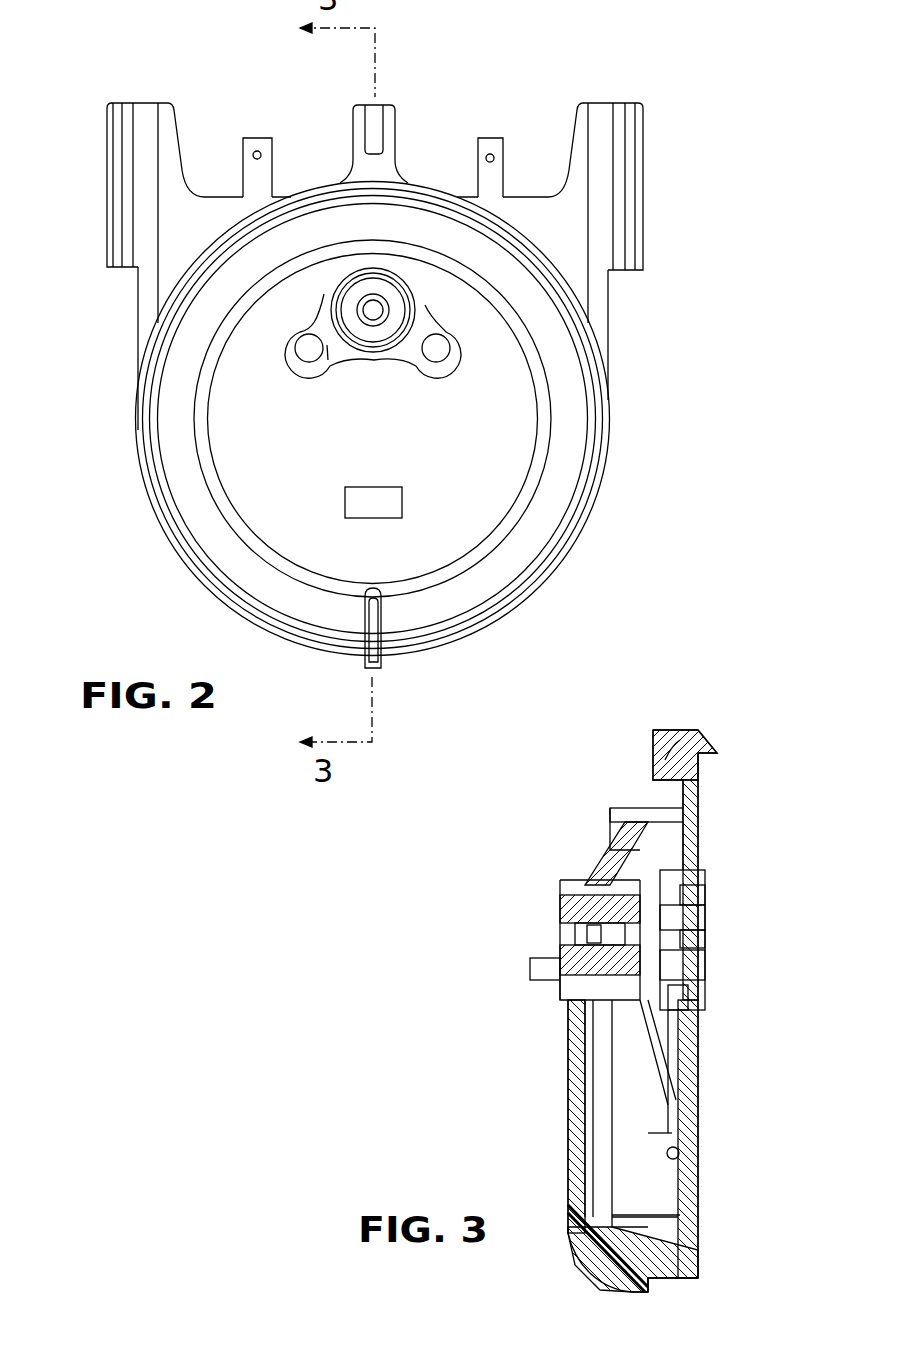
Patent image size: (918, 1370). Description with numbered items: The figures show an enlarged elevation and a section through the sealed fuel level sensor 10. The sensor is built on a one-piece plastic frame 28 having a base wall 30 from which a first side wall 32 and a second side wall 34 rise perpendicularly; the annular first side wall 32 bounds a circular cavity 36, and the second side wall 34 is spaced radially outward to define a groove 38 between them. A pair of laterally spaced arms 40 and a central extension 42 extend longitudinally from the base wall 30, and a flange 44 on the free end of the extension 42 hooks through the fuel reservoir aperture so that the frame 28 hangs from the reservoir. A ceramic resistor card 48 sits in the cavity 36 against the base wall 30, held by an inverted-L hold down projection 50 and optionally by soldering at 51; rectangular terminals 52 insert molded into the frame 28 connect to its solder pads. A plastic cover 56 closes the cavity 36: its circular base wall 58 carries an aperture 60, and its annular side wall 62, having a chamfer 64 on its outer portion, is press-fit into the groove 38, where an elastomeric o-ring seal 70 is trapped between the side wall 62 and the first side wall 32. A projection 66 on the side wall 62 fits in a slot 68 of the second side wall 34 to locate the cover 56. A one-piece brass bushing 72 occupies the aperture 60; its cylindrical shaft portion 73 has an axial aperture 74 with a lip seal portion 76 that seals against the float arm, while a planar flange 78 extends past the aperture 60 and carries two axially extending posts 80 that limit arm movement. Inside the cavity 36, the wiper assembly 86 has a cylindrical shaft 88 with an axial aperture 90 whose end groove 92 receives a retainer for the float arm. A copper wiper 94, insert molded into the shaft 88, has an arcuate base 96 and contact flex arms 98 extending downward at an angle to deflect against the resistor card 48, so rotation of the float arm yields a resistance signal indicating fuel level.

In FIG. 2, the sealed fuel level sensor 10 is at (660, 77).
In FIG. 3, the sealed fuel level sensor 10 is at (573, 747).
In FIG. 2, the frame 28 is at (610, 330).
In FIG. 3, the frame 28 is at (700, 808).
In FIG. 3, the base wall 30 is at (690, 1062).
In FIG. 3, the first side wall 32 is at (638, 1232).
In FIG. 3, the second side wall 34 is at (677, 1273).
In FIG. 3, the cavity 36 is at (680, 1158).
In FIG. 3, the groove 38 is at (606, 832).
In FIG. 2, the arms 40 is at (127, 193).
In FIG. 2, the extension 42 is at (385, 183).
In FIG. 3, the extension 42 is at (700, 770).
In FIG. 2, the flange 44 is at (375, 148).
In FIG. 3, the flange 44 is at (665, 760).
In FIG. 3, the ceramic resistor card 48 is at (700, 1012).
In FIG. 3, the hold down projection 50 is at (705, 968).
In FIG. 3, the soldering 51 is at (690, 1115).
In FIG. 2, the terminals 52 is at (256, 170).
In FIG. 2, the cover 56 is at (582, 504).
In FIG. 3, the cover 56 is at (572, 1138).
In FIG. 2, the base wall 58 is at (385, 466).
In FIG. 3, the base wall 58 is at (612, 1072).
In FIG. 3, the aperture 60 is at (566, 902).
In FIG. 3, the side wall 62 is at (642, 828).
In FIG. 2, the chamfer 64 is at (537, 530).
In FIG. 3, the chamfer 64 is at (588, 862).
In FIG. 2, the projection 66 is at (367, 620).
In FIG. 3, the projection 66 is at (600, 1268).
In FIG. 2, the slot 68 is at (377, 655).
In FIG. 3, the seal 70 is at (700, 850).
In FIG. 2, the bushing 72 is at (322, 295).
In FIG. 3, the bushing 72 is at (560, 952).
In FIG. 2, the shaft portion 73 is at (377, 330).
In FIG. 3, the shaft portion 73 is at (565, 912).
In FIG. 2, the aperture 74 is at (387, 309).
In FIG. 3, the aperture 74 is at (568, 932).
In FIG. 3, the lip seal portion 76 is at (578, 983).
In FIG. 2, the flange 78 is at (328, 357).
In FIG. 3, the flange 78 is at (568, 882).
In FIG. 2, the posts 80 is at (300, 348).
In FIG. 3, the posts 80 is at (540, 970).
In FIG. 3, the wiper assembly 86 is at (706, 872).
In FIG. 3, the shaft 88 is at (702, 902).
In FIG. 3, the aperture 90 is at (702, 942).
In FIG. 3, the groove 92 is at (708, 918).
In FIG. 3, the wiper 94 is at (688, 1038).
In FIG. 3, the base 96 is at (590, 1034).
In FIG. 3, the contact flex arms 98 is at (592, 1088).